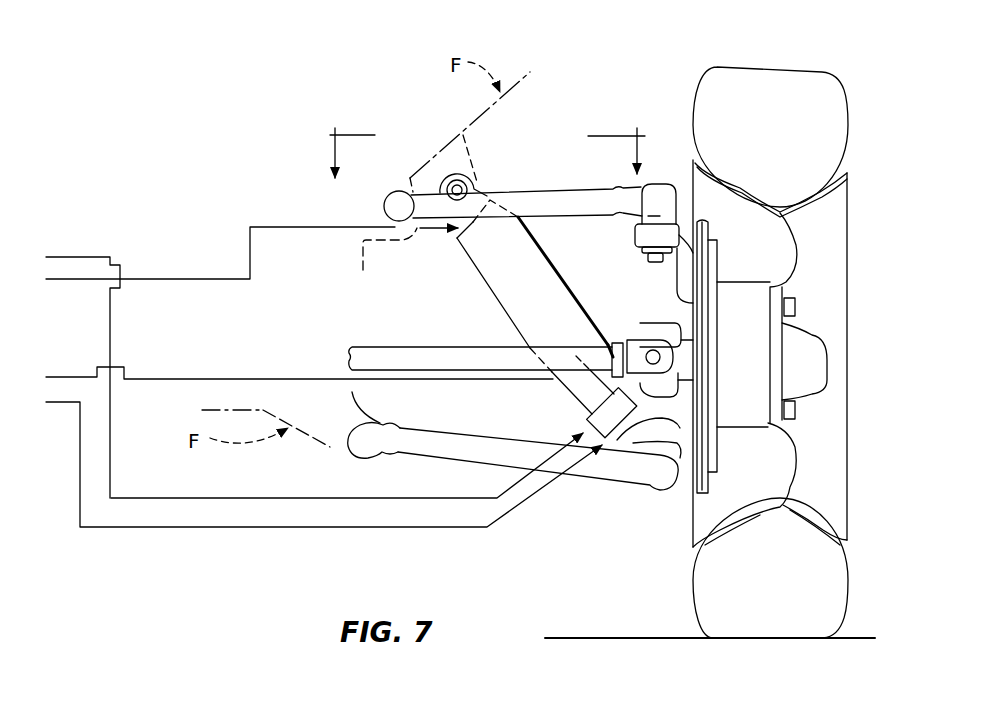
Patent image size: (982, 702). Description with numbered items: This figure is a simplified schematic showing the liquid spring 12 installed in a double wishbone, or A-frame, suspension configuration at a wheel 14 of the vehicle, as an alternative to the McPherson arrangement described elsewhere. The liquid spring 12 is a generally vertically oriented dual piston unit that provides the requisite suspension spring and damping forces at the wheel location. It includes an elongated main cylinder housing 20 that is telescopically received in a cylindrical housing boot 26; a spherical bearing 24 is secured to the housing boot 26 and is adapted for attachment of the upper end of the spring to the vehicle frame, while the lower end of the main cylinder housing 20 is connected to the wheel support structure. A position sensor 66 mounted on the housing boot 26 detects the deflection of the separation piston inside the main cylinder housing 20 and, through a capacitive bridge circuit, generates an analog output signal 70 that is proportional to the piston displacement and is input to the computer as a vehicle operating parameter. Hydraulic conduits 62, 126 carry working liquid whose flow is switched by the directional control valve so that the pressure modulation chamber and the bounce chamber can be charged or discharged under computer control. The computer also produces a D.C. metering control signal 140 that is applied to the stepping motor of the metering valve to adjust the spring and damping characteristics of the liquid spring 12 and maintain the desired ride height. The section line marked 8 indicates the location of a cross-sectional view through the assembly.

The section line 8- 8 is at (481, 143).
The liquid spring 12 is at (465, 272).
The wheel 14 is at (779, 88).
The main cylinder housing 20 is at (580, 400).
The spherical bearing 24 is at (470, 183).
The cylindrical housing boot 26 is at (536, 287).
The hydraulic conduit 62 is at (283, 227).
The position sensor 66 is at (557, 383).
The analog output signal 70 is at (229, 379).
The hydraulic conduit 126 is at (268, 498).
The D.C. metering control signal 140 is at (308, 527).